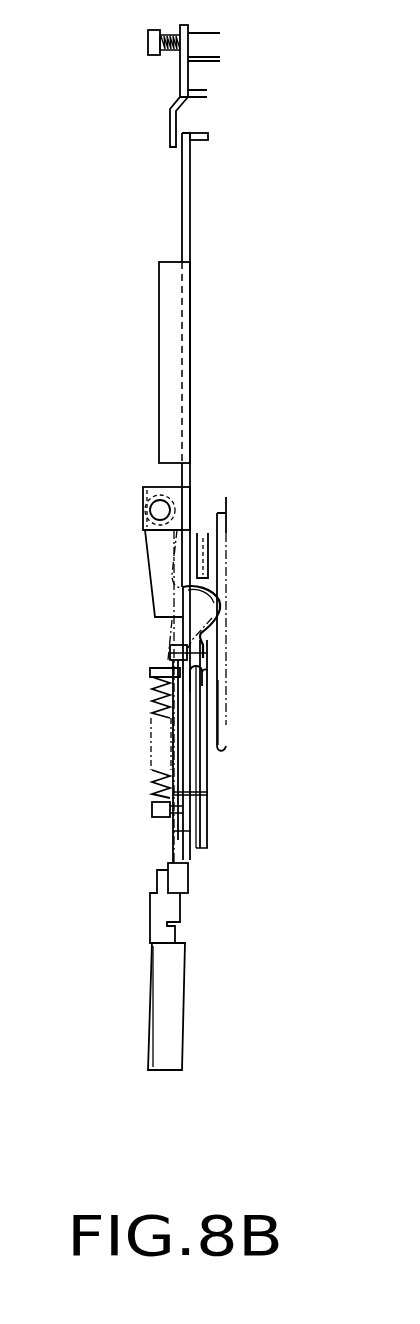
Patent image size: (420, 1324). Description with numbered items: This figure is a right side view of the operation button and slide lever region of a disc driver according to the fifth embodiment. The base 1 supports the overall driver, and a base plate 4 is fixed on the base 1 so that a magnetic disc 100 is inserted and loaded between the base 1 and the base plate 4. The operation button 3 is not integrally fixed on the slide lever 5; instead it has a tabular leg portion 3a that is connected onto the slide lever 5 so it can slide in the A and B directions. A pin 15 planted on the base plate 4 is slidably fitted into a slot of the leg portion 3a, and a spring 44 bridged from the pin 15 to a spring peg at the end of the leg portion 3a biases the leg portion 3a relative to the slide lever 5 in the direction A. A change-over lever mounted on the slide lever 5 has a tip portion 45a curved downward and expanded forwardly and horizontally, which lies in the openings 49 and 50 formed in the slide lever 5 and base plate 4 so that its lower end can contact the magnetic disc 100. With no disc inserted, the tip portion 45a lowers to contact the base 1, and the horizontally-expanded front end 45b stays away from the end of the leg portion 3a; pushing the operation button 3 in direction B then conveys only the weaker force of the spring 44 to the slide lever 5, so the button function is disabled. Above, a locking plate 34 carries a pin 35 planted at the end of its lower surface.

The locking plate 34 is at (180, 80).
The pin 35 is at (197, 140).
The slide lever 5 is at (183, 354).
The magnetic disc 100 is at (220, 528).
The tip portion 45a is at (203, 610).
The horizontally-expanded front end 45b is at (180, 650).
The opening 50 is at (208, 663).
The spring 44 is at (157, 710).
The opening 49 is at (208, 695).
The base 1 is at (226, 722).
The pin 15 is at (152, 812).
The base plate 4 is at (202, 817).
The leg portion 3a is at (175, 845).
The operation button 3 is at (173, 992).